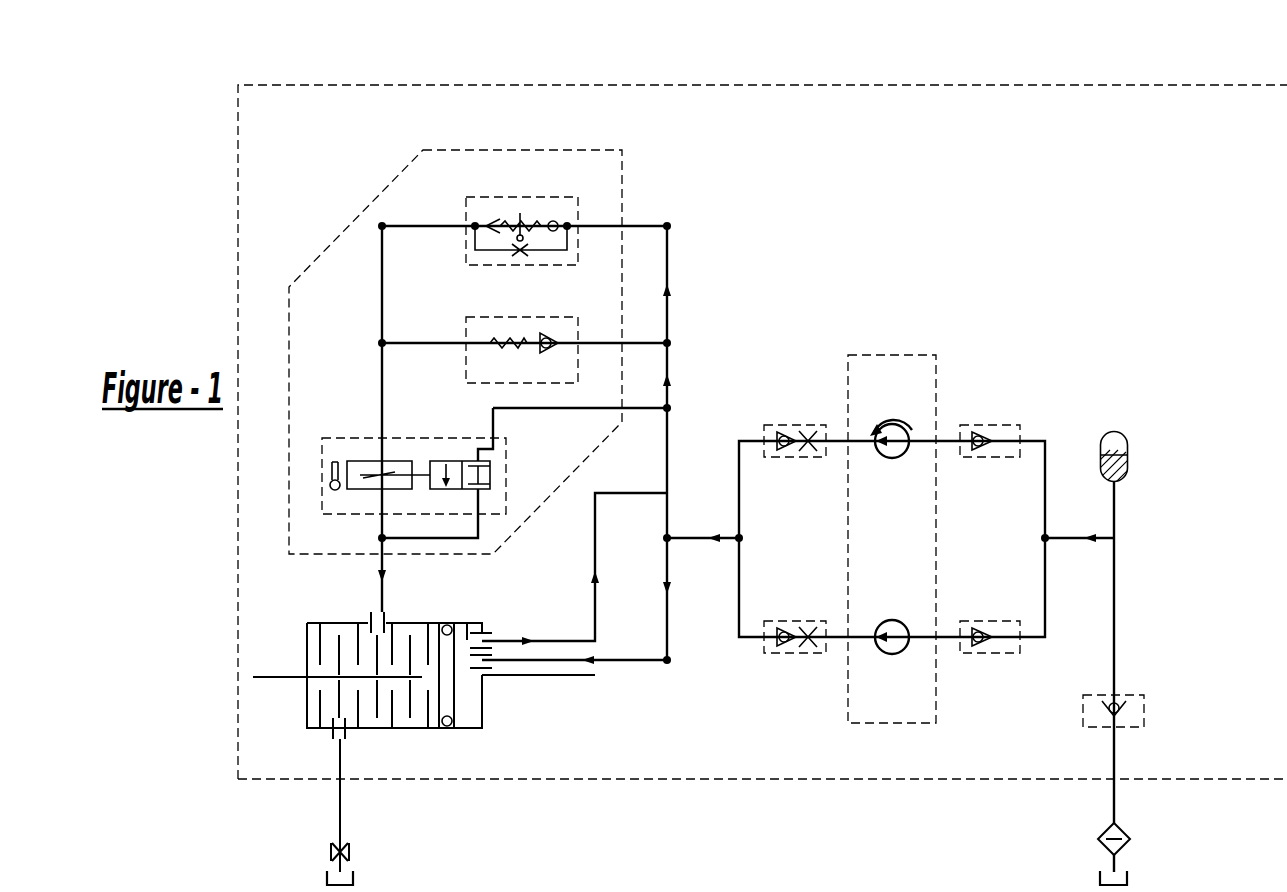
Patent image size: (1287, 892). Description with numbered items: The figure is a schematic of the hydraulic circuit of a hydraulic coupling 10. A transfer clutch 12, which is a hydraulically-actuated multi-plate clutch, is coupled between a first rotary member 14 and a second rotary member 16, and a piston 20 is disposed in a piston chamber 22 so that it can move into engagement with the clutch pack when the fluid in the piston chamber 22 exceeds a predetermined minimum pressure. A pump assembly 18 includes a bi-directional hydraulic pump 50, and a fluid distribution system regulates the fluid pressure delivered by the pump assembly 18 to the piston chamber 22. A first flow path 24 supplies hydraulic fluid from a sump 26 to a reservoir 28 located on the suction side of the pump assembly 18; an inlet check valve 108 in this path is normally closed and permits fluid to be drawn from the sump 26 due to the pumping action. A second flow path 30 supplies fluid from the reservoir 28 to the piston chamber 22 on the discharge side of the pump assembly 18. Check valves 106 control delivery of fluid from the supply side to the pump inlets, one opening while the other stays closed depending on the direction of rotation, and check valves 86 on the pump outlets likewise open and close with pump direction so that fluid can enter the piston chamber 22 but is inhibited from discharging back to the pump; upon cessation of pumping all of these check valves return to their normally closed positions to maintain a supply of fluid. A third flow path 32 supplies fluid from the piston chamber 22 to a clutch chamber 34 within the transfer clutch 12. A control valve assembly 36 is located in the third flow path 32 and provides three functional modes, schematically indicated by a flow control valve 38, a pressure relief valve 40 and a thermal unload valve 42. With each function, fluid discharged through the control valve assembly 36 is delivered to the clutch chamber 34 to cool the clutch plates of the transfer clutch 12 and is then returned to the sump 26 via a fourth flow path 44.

The hydraulic coupling 10 is at (904, 72).
The transfer clutch 12 is at (422, 612).
The first rotary member 14 is at (538, 677).
The second rotary member 16 is at (283, 678).
The pump assembly 18 is at (958, 376).
The piston 20 is at (448, 696).
The piston chamber 22 is at (463, 622).
The first flow path 24 is at (1092, 620).
The sump 26 is at (353, 882).
The reservoir 28 is at (1117, 442).
The second flow path 30 is at (633, 663).
The third flow path 32 is at (682, 441).
The clutch chamber 34 is at (335, 630).
The control valve assembly 36 is at (630, 190).
The flow control valve 38 is at (470, 208).
The pressure relief valve 40 is at (470, 330).
The thermal unload valve 42 is at (350, 447).
The fourth flow path 44 is at (340, 815).
The bi-directional hydraulic pump 50 is at (893, 732).
The check valve 86 is at (790, 426).
The check valve 106 is at (998, 428).
The inlet check valve 108 is at (1145, 712).